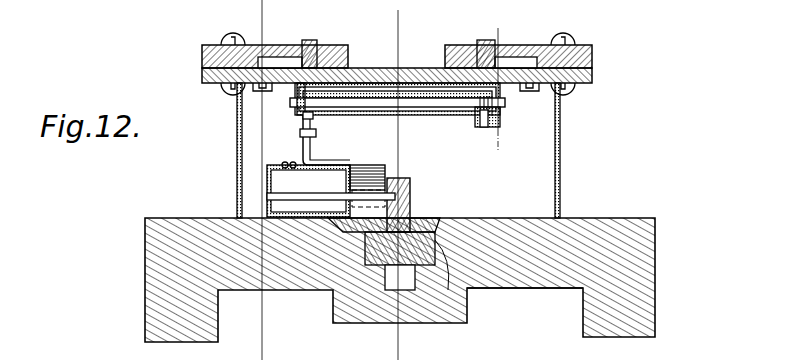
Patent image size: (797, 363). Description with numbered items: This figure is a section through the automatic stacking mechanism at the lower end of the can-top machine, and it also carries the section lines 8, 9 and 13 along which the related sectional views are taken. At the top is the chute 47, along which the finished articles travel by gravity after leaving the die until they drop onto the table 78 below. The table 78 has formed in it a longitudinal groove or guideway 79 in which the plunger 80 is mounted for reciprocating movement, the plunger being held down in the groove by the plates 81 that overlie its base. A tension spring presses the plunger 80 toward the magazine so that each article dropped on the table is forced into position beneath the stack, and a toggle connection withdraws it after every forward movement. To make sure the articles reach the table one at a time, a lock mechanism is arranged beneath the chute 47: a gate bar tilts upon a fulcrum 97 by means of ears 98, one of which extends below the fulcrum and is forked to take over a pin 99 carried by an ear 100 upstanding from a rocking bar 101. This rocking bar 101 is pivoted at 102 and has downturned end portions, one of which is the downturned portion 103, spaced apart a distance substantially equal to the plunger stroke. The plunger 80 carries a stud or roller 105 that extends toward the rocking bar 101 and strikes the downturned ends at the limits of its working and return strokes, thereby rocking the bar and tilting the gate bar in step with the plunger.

The chute 47 is at (346, 57).
The table 78 is at (515, 222).
The longitudinal groove or guideway 79 is at (470, 291).
The plunger 80 is at (411, 203).
The plates 81 is at (449, 224).
The fulcrum 97 is at (455, 105).
The ears 98 is at (307, 116).
The pin 99 is at (309, 133).
The ear 100 is at (304, 164).
The rocking bar 101 is at (334, 158).
The pivot 102 is at (331, 189).
The downturned portion 103 is at (374, 158).
The stud or roller 105 is at (396, 176).
The section line 8— 8 is at (414, 27).
The section line 9— 9 is at (280, 12).
The section line 13— 13 is at (516, 28).